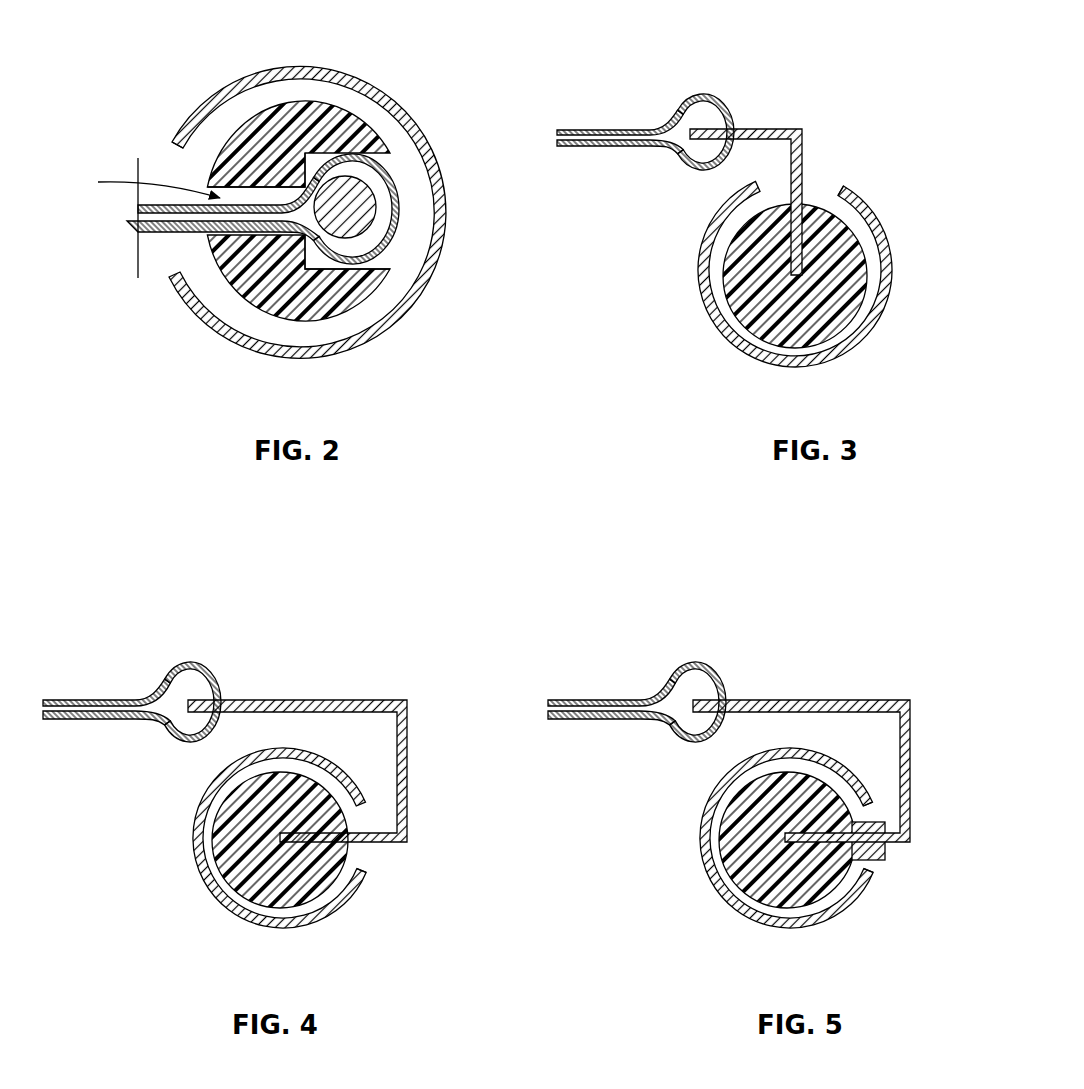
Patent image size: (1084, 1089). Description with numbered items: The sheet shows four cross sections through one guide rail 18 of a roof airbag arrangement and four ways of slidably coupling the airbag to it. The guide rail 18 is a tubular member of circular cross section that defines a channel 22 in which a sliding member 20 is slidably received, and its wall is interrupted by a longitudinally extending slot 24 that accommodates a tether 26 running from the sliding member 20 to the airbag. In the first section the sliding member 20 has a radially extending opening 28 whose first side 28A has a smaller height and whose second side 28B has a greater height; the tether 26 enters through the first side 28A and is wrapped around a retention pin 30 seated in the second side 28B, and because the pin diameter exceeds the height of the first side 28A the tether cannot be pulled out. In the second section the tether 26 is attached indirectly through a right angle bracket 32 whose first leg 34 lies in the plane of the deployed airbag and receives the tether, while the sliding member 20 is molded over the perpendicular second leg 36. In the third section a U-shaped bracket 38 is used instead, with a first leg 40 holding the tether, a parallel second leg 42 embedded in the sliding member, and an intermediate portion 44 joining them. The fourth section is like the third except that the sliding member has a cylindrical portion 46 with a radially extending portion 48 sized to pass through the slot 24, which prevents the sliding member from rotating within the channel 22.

In FIG. 2, the guide rail 18 is at (446, 166).
In FIG. 3, the guide rail 18 is at (898, 243).
In FIG. 4, the guide rail 18 is at (185, 836).
In FIG. 5, the guide rail 18 is at (693, 869).
In FIG. 2, the sliding member 20 is at (255, 262).
In FIG. 3, the sliding member 20 is at (763, 270).
In FIG. 4, the sliding member 20 is at (298, 792).
In FIG. 5, the sliding member 20 is at (793, 765).
In FIG. 2, the channel 22 is at (330, 333).
In FIG. 3, the channel 22 is at (843, 340).
In FIG. 4, the channel 22 is at (263, 915).
In FIG. 5, the channel 22 is at (782, 913).
In FIG. 2, the longitudinally extending slot 24 is at (183, 153).
In FIG. 3, the longitudinally extending slot 24 is at (830, 193).
In FIG. 4, the longitudinally extending slot 24 is at (362, 873).
In FIG. 5, the longitudinally extending slot 24 is at (871, 810).
In FIG. 2, the tether 26 is at (283, 216).
In FIG. 3, the tether 26 is at (612, 146).
In FIG. 4, the tether 26 is at (75, 720).
In FIG. 5, the tether 26 is at (588, 720).
In FIG. 2, the radially extending opening 28 is at (141, 183).
In FIG. 2, the first side of the opening 28A is at (249, 186).
In FIG. 2, the second side of the opening 28B is at (395, 258).
In FIG. 2, the retention pin 30 is at (360, 222).
In FIG. 3, the bracket 32 is at (761, 169).
In FIG. 3, the first leg 34 is at (738, 129).
In FIG. 3, the second leg 36 is at (802, 167).
In FIG. 4, the bracket 38 is at (333, 742).
In FIG. 4, the first leg 40 is at (260, 700).
In FIG. 4, the second leg 42 is at (377, 833).
In FIG. 4, the intermediate portion 44 is at (408, 773).
In FIG. 5, the cylindrical portion 46 is at (818, 780).
In FIG. 5, the radially extending portion 48 is at (879, 853).